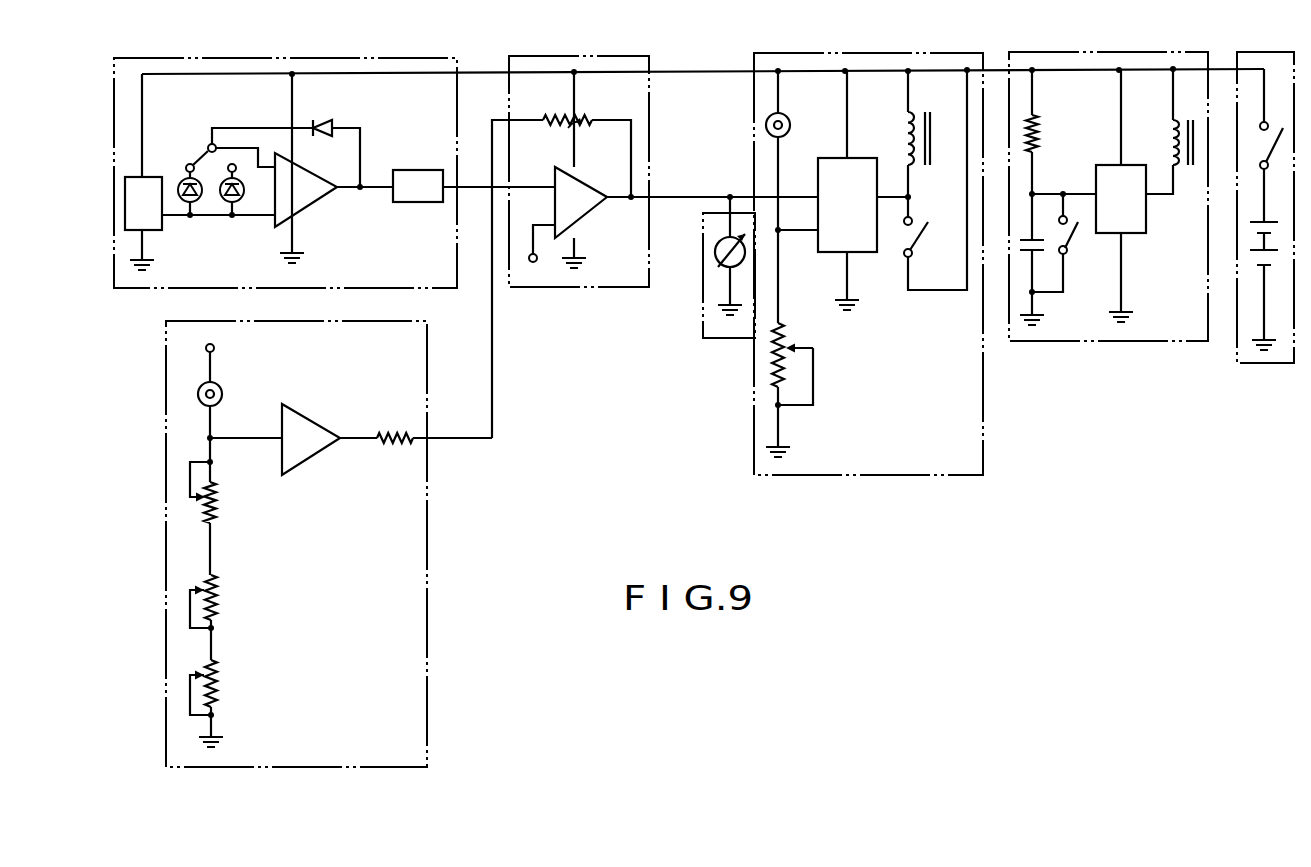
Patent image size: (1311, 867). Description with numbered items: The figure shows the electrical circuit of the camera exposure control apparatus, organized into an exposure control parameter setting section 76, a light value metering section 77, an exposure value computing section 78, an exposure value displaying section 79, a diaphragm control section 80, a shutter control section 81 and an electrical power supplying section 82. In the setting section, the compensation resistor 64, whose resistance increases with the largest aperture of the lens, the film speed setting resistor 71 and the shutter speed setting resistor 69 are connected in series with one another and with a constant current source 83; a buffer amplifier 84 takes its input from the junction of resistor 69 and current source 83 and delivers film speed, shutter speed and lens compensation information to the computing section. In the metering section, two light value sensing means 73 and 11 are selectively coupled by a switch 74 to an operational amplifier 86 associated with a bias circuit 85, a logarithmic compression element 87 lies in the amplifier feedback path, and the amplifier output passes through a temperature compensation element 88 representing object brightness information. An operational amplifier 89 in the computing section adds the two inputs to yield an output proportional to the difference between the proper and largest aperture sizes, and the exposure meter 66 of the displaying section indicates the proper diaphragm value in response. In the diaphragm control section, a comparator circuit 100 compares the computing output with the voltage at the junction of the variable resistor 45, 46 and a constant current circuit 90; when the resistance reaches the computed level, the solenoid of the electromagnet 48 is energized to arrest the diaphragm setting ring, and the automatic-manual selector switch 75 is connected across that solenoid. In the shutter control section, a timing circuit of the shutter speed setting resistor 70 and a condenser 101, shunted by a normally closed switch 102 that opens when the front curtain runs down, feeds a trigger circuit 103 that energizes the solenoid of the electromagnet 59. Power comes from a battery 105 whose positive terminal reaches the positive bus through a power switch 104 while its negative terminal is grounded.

The light value sensing means 11 is at (232, 204).
The variable resistor 45 is at (787, 336).
The variable resistor 46 is at (810, 348).
The electromagnet solenoid 48 is at (915, 120).
The electromagnet solenoid 59 is at (1176, 124).
The compensation resistor 64 is at (222, 683).
The exposure meter 66 is at (715, 256).
The shutter speed setting resistor 69 is at (222, 502).
The shutter speed setting resistor 70 is at (1044, 133).
The film speed setting resistor 71 is at (222, 597).
The light value sensing means 73 is at (188, 204).
The switch 74 is at (199, 158).
The automatic-manual selector switch 75 is at (916, 221).
The exposure control parameter setting section 76 is at (417, 568).
The light value metering section 77 is at (255, 66).
The exposure value computing section 78 is at (553, 62).
The exposure value displaying section 79 is at (706, 332).
The diaphragm control section 80 is at (856, 60).
The shutter control section 81 is at (1097, 60).
The electrical power supplying section 82 is at (1249, 62).
The constant current source 83 is at (223, 390).
The buffer amplifier 84 is at (311, 439).
The bias circuit 85 is at (143, 203).
The operational amplifier 86 is at (306, 190).
The logarithmic compression element 87 is at (327, 124).
The temperature compensation element 88 is at (418, 186).
The operational amplifier 89 is at (581, 202).
The constant current circuit 90 is at (790, 122).
The comparator circuit 100 is at (847, 205).
The condenser 101 is at (1036, 239).
The normally closed switch 102 is at (1074, 248).
The trigger circuit 103 is at (1121, 199).
The power switch 104 is at (1275, 153).
The battery 105 is at (1268, 265).